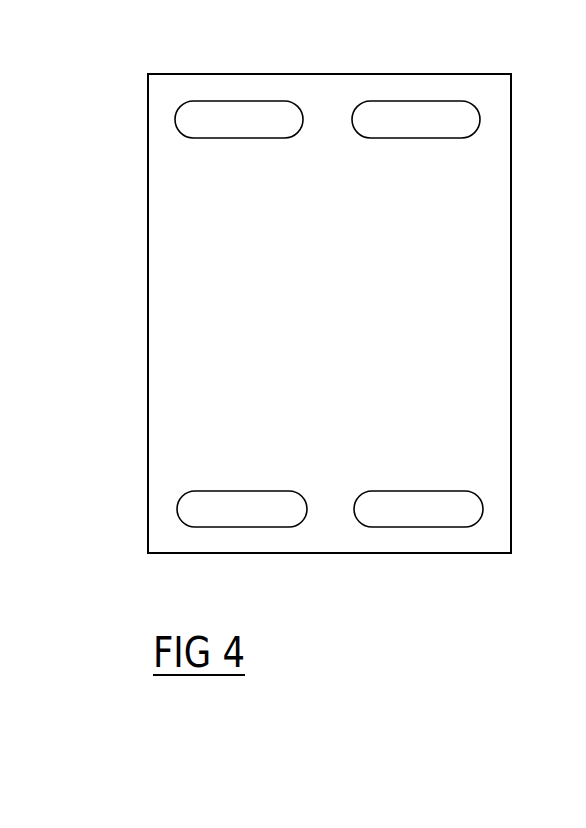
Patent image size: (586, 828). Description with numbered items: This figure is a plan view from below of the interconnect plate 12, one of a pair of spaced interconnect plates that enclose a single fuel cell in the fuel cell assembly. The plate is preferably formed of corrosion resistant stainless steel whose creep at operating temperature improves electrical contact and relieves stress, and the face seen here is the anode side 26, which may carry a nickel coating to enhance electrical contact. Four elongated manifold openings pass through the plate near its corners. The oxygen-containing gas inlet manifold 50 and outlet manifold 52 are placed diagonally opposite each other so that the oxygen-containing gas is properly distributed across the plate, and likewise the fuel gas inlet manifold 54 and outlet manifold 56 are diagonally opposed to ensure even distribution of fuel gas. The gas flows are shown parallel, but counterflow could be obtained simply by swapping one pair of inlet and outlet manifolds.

The interconnect plate 12 is at (148, 299).
The anode side 26 is at (203, 248).
The oxygen-containing gas inlet manifold 50 is at (417, 120).
The oxygen-containing gas outlet manifold 52 is at (205, 511).
The fuel gas inlet manifold 54 is at (233, 117).
The fuel gas outlet manifold 56 is at (465, 512).